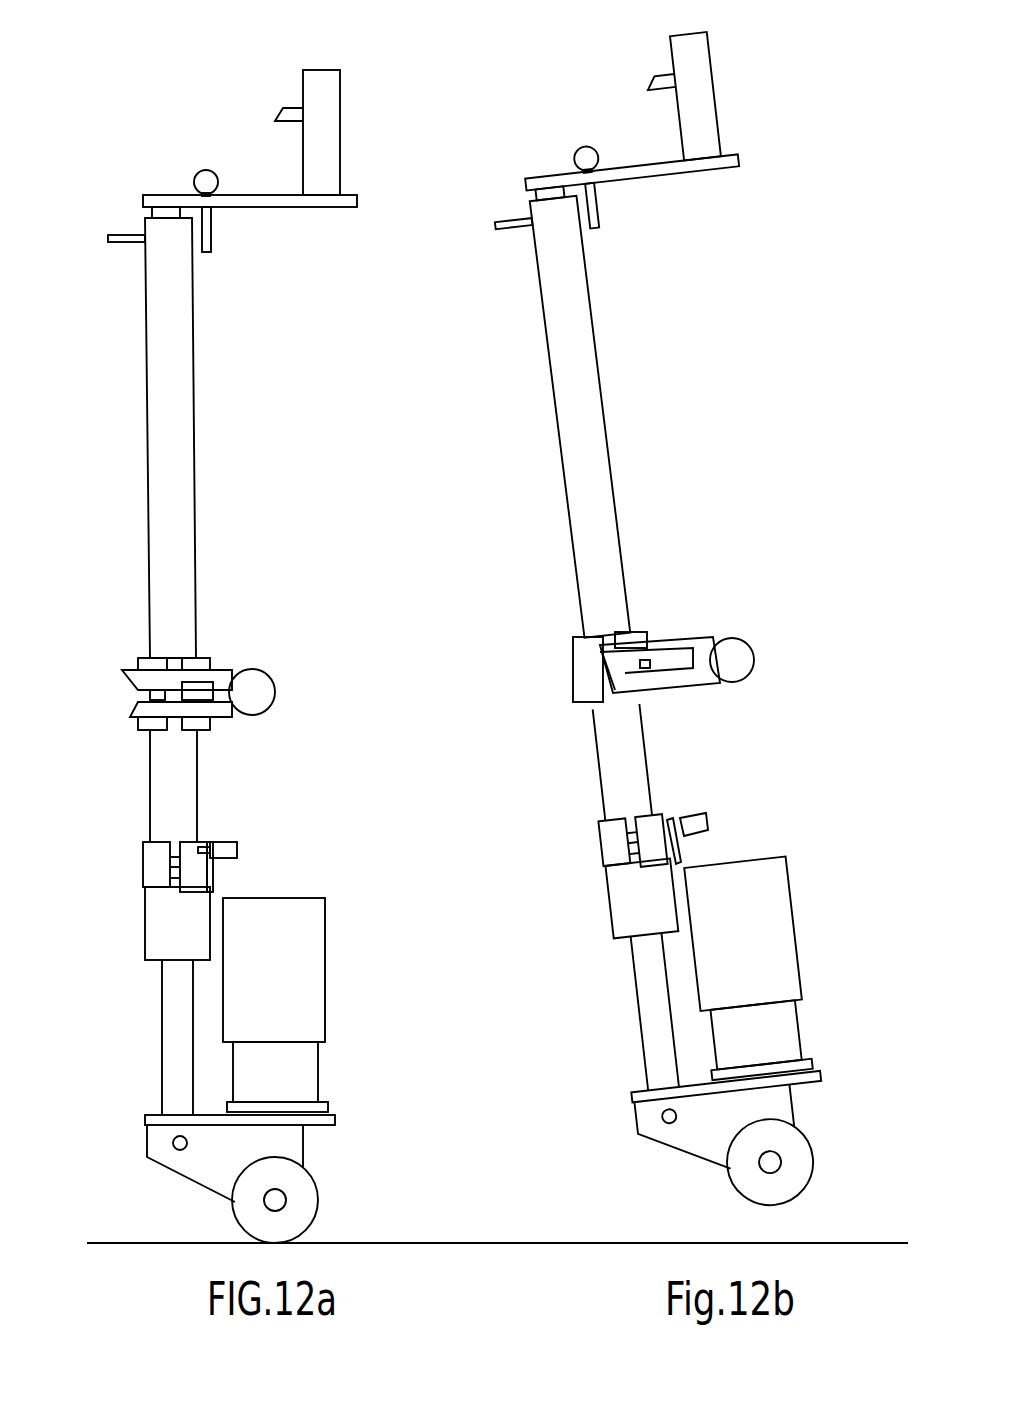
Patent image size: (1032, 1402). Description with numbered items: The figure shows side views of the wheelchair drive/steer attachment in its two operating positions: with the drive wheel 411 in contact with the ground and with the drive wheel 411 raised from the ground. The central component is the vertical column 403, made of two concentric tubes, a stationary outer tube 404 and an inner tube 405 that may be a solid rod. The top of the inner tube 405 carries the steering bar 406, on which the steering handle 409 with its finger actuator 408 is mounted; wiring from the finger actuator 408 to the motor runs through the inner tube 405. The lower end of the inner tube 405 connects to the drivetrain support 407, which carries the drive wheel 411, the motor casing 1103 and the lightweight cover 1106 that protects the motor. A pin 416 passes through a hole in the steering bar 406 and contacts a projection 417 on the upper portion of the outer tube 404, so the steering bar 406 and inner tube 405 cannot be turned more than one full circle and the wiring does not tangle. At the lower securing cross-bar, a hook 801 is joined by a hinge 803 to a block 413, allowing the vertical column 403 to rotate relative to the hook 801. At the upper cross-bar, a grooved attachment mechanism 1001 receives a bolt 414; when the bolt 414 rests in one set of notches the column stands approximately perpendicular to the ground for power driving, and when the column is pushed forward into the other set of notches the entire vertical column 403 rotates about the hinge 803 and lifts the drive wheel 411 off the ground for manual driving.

In FIG. 12A, the vertical column 403 is at (243, 487).
In FIG. 12B, the vertical column 403 is at (668, 478).
In FIG. 12A, the outer tube 404 is at (146, 398).
In FIG. 12B, the outer tube 404 is at (548, 357).
In FIG. 12A, the inner tube 405 is at (162, 1018).
In FIG. 12B, the inner tube 405 is at (643, 1023).
In FIG. 12A, the steering bar 406 is at (249, 208).
In FIG. 12B, the steering bar 406 is at (657, 175).
In FIG. 12A, the drivetrain support 407 is at (175, 1170).
In FIG. 12B, the drivetrain support 407 is at (665, 1143).
In FIG. 12A, the finger actuator 408 is at (276, 118).
In FIG. 12B, the finger actuator 408 is at (657, 77).
In FIG. 12A, the steering handle 409 is at (341, 93).
In FIG. 12B, the steering handle 409 is at (713, 68).
In FIG. 12A, the drive wheel 411 is at (318, 1215).
In FIG. 12B, the drive wheel 411 is at (813, 1170).
In FIG. 12A, the block 413 is at (143, 865).
In FIG. 12B, the block 413 is at (597, 838).
In FIG. 12A, the bolt 414 is at (212, 679).
In FIG. 12B, the bolt 414 is at (662, 640).
In FIG. 12A, the pin 416 is at (207, 253).
In FIG. 12B, the pin 416 is at (595, 228).
In FIG. 12A, the projection 417 is at (125, 243).
In FIG. 12B, the projection 417 is at (507, 228).
In FIG. 12A, the hook 801 is at (231, 842).
In FIG. 12B, the hook 801 is at (699, 812).
In FIG. 12A, the hinge 803 is at (213, 885).
In FIG. 12B, the hinge 803 is at (677, 857).
In FIG. 12A, the grooved attachment mechanism 1001 is at (277, 690).
In FIG. 12B, the grooved attachment mechanism 1001 is at (747, 650).
In FIG. 12A, the casing 1103 is at (318, 1075).
In FIG. 12B, the casing 1103 is at (800, 1040).
In FIG. 12A, the cover 1106 is at (325, 958).
In FIG. 12B, the cover 1106 is at (797, 938).